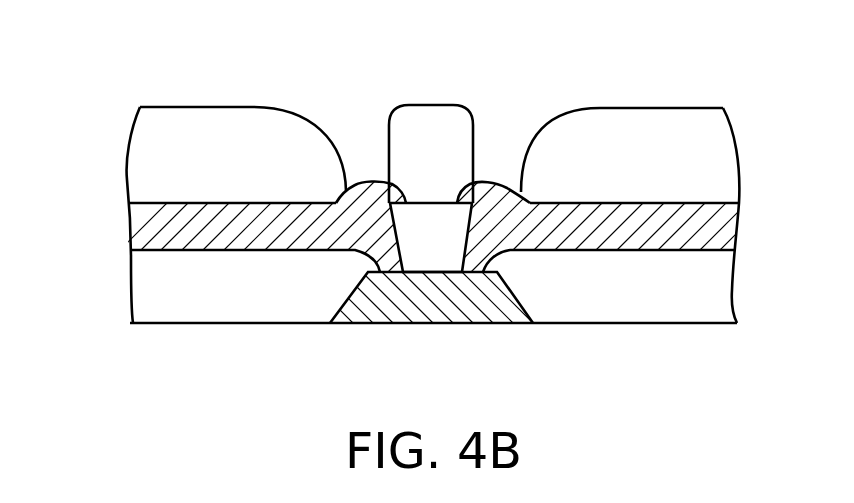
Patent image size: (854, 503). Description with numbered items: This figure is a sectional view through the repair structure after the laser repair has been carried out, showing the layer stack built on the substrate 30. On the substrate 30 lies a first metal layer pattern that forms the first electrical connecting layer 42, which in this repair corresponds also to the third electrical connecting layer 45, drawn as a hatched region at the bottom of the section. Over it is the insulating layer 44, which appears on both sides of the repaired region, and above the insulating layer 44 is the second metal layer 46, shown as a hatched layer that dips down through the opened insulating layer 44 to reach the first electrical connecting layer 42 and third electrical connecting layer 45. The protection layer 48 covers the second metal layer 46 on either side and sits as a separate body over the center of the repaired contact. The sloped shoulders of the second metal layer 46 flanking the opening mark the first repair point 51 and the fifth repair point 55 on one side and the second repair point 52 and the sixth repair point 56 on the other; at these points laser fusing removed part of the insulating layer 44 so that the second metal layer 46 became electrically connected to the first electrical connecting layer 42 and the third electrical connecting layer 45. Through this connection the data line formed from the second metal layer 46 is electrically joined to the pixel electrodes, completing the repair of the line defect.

The substrate 30 is at (443, 367).
The first electrical connecting layer 42 is at (441, 329).
The third electrical connecting layer 45 is at (480, 301).
The insulating layer 44 is at (150, 275).
The second metal layer 46 is at (148, 228).
The protection layer 48 is at (140, 158).
The first repair point 51 is at (349, 115).
The fifth repair point 55 is at (368, 133).
The second repair point 52 is at (522, 115).
The sixth repair point 56 is at (506, 138).